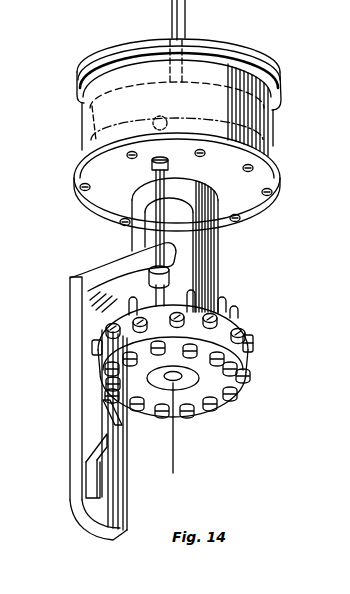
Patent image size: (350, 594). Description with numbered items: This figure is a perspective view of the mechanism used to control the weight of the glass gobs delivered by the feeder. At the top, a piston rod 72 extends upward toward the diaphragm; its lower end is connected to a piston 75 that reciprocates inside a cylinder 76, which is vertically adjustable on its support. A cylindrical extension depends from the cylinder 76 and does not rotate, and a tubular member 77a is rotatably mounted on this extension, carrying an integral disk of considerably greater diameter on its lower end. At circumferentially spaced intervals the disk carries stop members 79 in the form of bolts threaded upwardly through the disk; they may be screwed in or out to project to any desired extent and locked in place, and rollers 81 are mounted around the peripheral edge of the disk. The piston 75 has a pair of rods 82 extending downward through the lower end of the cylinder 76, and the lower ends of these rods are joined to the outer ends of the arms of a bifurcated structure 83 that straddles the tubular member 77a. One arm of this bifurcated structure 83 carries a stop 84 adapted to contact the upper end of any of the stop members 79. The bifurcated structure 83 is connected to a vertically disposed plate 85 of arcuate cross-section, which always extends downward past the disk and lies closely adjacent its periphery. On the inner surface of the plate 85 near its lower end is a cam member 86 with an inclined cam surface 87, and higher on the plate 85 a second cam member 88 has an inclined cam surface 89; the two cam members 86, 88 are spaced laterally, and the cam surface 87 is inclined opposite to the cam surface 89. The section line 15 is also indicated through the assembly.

The section line 15- 15 is at (186, 14).
The piston rod 72 is at (171, 25).
The piston 75 is at (82, 125).
The cylinder 76 is at (77, 74).
The tubular member 77a is at (205, 244).
The stop members 79 is at (228, 301).
The rollers 81 is at (254, 343).
The rods 82 is at (142, 203).
The bifurcated structure 83 is at (152, 254).
The stop 84 is at (171, 271).
The plate 85 is at (78, 343).
The cam member 86 is at (103, 482).
The cam surface 87 is at (90, 450).
The second cam member 88 is at (104, 388).
The cam surface 89 is at (104, 408).